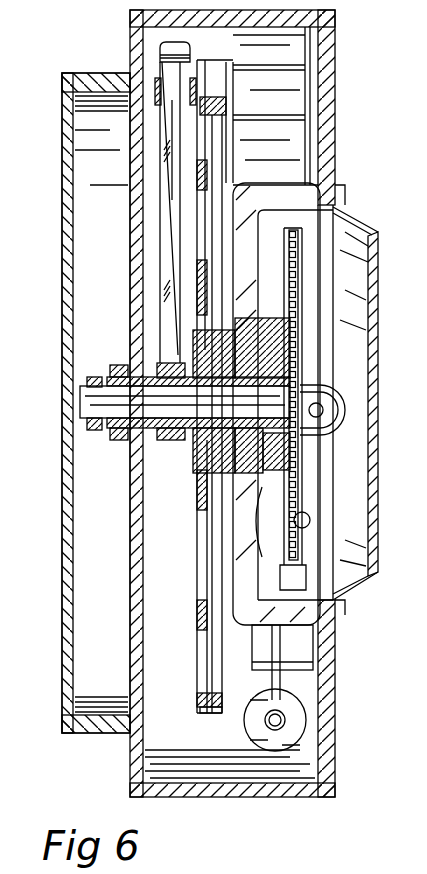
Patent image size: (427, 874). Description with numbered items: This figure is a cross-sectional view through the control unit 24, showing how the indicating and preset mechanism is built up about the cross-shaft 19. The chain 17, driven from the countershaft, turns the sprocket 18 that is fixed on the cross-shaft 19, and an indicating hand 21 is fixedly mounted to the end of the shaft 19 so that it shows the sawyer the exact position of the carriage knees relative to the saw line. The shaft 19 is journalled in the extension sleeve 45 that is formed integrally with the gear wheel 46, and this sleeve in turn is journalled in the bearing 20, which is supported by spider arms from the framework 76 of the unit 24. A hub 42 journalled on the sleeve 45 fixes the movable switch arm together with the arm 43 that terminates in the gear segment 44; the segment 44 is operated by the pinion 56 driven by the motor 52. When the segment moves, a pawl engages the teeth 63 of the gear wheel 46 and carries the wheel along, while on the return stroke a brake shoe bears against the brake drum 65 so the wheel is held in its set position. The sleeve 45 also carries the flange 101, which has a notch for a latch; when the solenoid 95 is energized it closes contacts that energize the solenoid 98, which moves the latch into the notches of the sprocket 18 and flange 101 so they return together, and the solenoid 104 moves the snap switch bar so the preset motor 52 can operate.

The control unit 24 is at (327, 147).
The indicating hand 21 is at (92, 375).
The cross-shaft 19 is at (140, 405).
The hub 42 is at (158, 365).
The extension sleeve 45 is at (180, 438).
The arm 43 is at (172, 248).
The gear segment 44 is at (190, 58).
The pinion 56 is at (157, 80).
The gear wheel 46 is at (228, 105).
The teeth 63 is at (203, 706).
The motor 52 is at (290, 103).
The chain 17 is at (297, 316).
The sprocket 18 is at (293, 296).
The solenoid 98 is at (322, 398).
The flange 101 is at (290, 462).
The solenoid 104 is at (302, 522).
The bearing 20 is at (225, 452).
The brake drum 65 is at (216, 708).
The framework 76 is at (215, 485).
The solenoid 95 is at (276, 722).